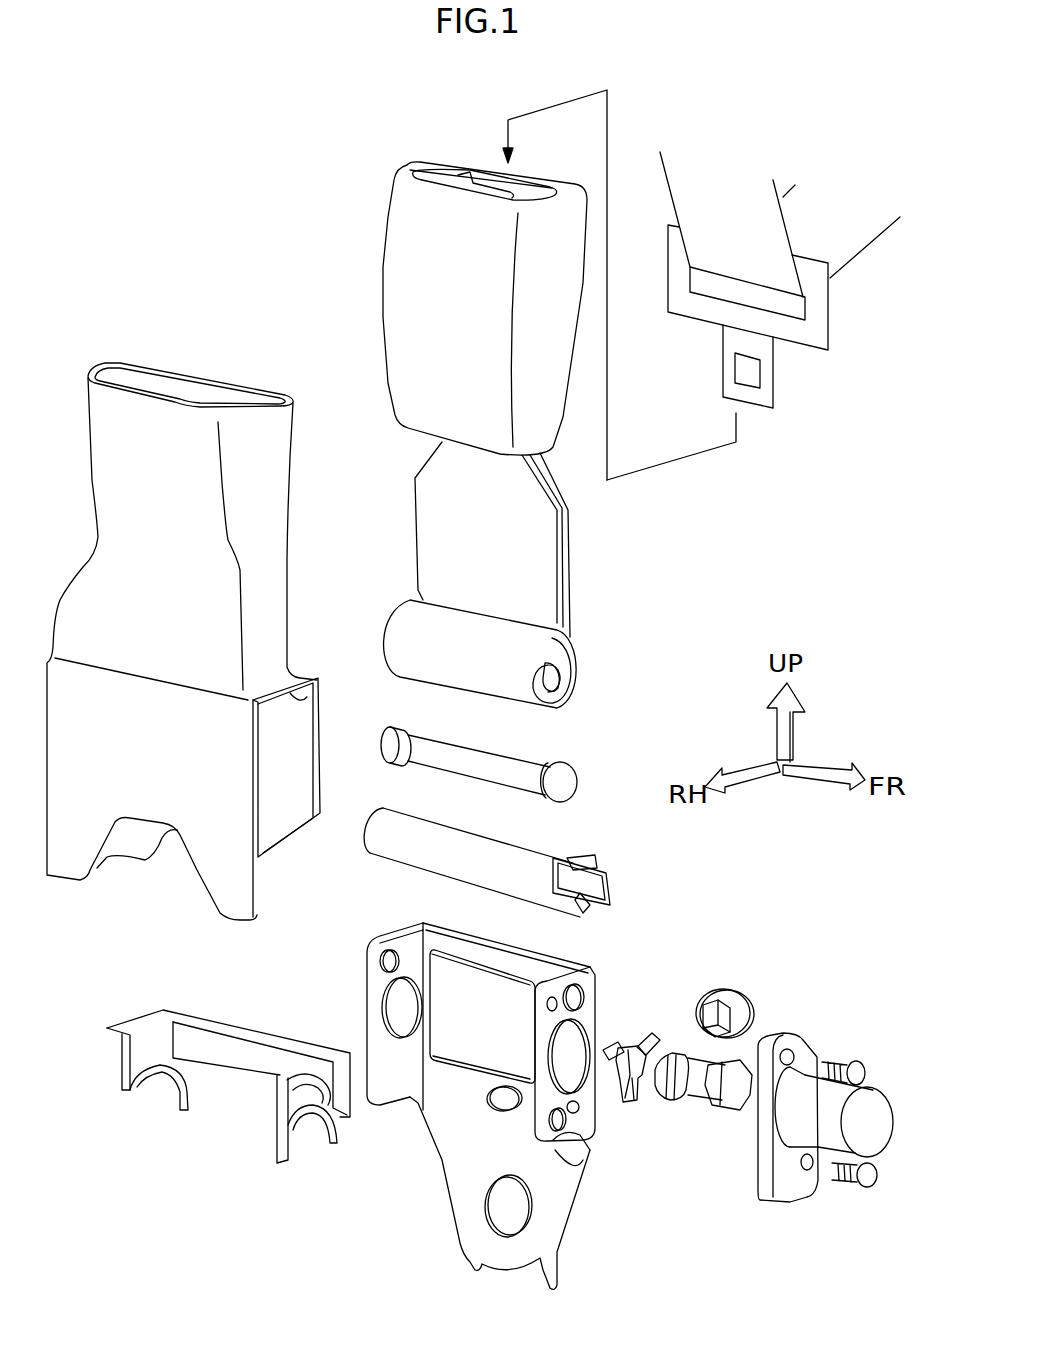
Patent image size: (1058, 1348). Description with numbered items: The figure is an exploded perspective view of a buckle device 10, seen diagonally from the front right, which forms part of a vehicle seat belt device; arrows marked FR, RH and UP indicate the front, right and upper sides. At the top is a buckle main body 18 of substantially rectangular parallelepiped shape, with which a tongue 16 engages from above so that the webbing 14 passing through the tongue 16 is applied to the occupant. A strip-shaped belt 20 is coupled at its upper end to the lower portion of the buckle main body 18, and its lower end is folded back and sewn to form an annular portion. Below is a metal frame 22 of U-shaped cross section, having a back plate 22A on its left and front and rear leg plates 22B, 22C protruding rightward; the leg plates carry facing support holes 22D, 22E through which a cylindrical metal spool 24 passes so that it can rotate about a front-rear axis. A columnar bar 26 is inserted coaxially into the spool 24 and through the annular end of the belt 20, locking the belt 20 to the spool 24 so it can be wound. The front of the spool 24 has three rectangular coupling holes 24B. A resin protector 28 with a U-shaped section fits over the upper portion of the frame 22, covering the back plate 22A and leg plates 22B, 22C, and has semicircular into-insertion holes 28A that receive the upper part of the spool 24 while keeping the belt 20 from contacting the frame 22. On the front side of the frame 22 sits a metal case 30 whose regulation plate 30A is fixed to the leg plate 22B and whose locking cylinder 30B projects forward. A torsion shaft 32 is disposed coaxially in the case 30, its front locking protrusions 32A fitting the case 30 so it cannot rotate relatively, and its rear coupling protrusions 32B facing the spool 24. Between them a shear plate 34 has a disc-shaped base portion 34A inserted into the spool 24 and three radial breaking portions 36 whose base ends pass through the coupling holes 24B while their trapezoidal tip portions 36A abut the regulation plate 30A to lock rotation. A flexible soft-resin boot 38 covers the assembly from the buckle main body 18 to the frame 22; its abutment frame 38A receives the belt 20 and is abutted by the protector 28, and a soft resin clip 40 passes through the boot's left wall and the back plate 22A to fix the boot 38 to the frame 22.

The buckle device 10 is at (212, 241).
The webbing 14 is at (860, 255).
The tongue 16 is at (828, 337).
The buckle main body 18 is at (385, 222).
The belt 20 is at (571, 563).
The frame 22 is at (489, 1082).
The back plate 22A is at (447, 1190).
The leg plate 22B is at (560, 1145).
The leg plate 22C is at (408, 923).
The support hole 22D is at (603, 1010).
The support hole 22E is at (386, 1012).
The spool 24 is at (491, 841).
The coupling hole 24B is at (633, 828).
The bar 26 is at (520, 753).
The protector 28 is at (225, 1090).
The into-insertion hole 28A is at (143, 1082).
The case 30 is at (842, 1115).
The regulation plate 30A is at (793, 1203).
The locking cylinder 30B is at (873, 1087).
The torsion shaft 32 is at (703, 1134).
The locking protrusion 32A is at (730, 1113).
The coupling protrusion 32B is at (667, 1102).
The shear plate 34 is at (623, 1075).
The base portion 34A is at (612, 1094).
The breaking portion 36 is at (667, 1057).
The tip portion 36A is at (652, 1048).
The boot 38 is at (206, 641).
The abutment frame 38A is at (321, 693).
The clip 40 is at (730, 990).